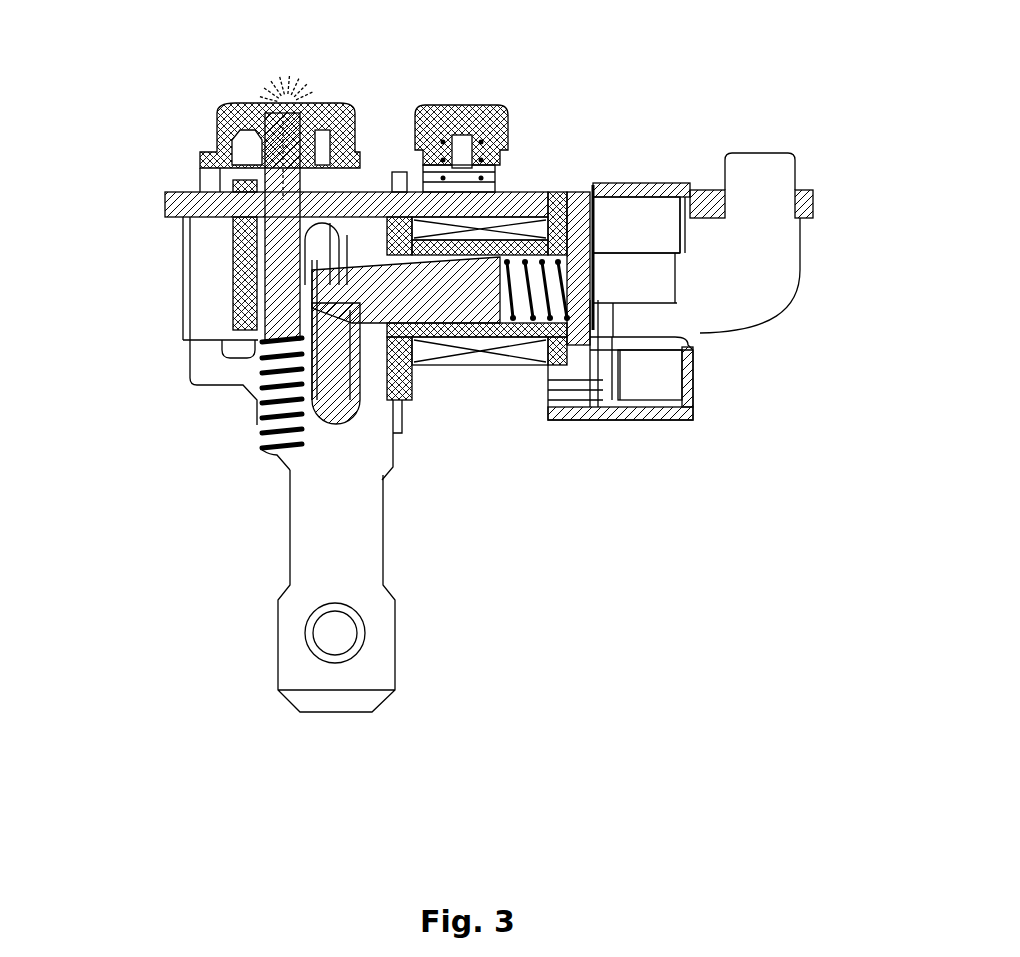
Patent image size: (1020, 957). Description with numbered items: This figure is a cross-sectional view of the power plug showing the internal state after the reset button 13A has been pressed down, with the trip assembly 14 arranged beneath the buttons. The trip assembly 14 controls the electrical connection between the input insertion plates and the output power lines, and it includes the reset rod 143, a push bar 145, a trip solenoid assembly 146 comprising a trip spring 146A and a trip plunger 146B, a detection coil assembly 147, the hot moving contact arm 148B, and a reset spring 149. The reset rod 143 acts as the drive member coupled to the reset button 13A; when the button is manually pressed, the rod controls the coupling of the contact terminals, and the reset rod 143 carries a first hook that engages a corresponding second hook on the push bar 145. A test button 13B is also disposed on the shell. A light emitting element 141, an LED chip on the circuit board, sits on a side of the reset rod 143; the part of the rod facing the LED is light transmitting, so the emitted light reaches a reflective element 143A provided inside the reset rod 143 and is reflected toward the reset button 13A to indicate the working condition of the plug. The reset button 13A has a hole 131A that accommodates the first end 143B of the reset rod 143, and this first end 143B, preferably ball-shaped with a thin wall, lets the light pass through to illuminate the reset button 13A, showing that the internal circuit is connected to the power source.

The hole 131A is at (287, 100).
The first end 143B is at (222, 106).
The reset button 13A is at (303, 100).
The test button 13B is at (470, 107).
The trip assembly 14 is at (593, 185).
The detection coil assembly 147 is at (767, 185).
The light emitting element 141 is at (232, 184).
The reflective element 143A is at (227, 220).
The reset rod 143 is at (237, 273).
The trip spring 146A is at (623, 373).
The trip solenoid assembly 146 is at (583, 413).
The hot moving contact arm 148B is at (490, 358).
The trip plunger 146B is at (402, 400).
The push bar 145 is at (337, 387).
The reset spring 149 is at (277, 453).